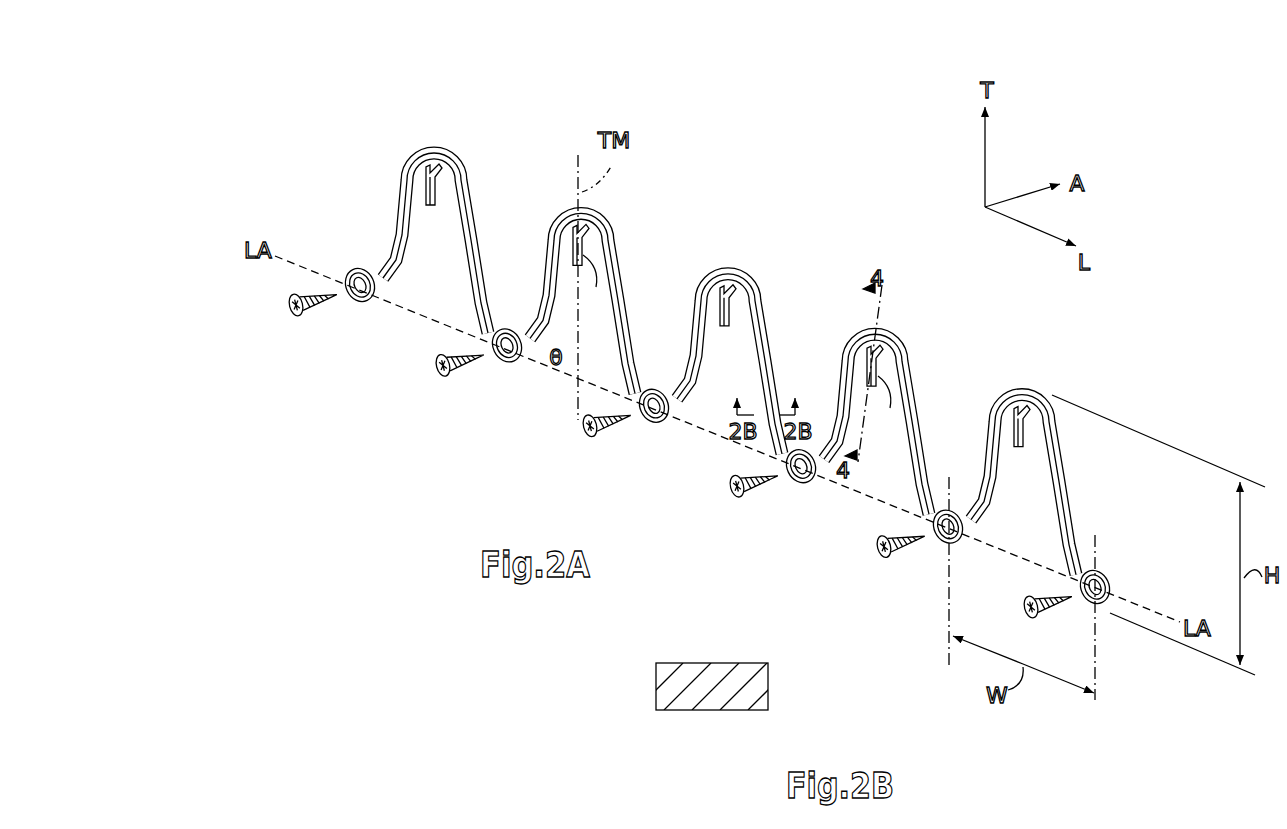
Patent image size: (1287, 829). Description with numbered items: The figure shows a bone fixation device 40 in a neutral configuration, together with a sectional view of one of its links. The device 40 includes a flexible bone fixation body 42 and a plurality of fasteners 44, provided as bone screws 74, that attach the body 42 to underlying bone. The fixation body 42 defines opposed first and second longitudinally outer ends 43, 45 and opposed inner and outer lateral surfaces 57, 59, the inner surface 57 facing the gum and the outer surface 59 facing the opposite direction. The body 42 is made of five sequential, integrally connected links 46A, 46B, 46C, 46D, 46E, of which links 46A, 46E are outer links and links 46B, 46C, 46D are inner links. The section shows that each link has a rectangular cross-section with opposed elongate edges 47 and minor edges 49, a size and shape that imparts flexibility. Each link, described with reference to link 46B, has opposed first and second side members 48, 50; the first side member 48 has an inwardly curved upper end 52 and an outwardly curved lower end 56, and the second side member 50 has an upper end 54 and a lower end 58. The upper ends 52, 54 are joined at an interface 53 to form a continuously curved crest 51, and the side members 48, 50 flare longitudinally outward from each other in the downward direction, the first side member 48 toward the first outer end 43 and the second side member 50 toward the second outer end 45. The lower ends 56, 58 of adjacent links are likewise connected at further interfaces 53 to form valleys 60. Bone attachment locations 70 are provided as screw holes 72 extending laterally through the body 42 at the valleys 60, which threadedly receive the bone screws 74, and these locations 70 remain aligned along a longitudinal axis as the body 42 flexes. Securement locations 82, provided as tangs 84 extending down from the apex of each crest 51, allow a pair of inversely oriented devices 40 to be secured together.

In FIG. 2A, the bone fixation device 40 is at (476, 148).
In FIG. 2A, the flexible bone fixation body 42 is at (395, 168).
In FIG. 2A, the first longitudinally outer end 43 is at (345, 270).
In FIG. 2A, the fasteners 44 is at (287, 312).
In FIG. 2A, the second longitudinally outer end 45 is at (1117, 583).
In FIG. 2A, the link 46A is at (385, 240).
In FIG. 2A, the link 46B is at (537, 295).
In FIG. 2A, the link 46C is at (778, 362).
In FIG. 2A, the link 46D is at (927, 405).
In FIG. 2A, the link 46E is at (1073, 508).
In FIG. 2A, the elongate edges 47 is at (978, 515).
In FIG. 2B, the elongate edges 47 is at (698, 663).
In FIG. 2A, the first side member 48 is at (393, 188).
In FIG. 2A, the minor edges 49 is at (988, 487).
In FIG. 2B, the minor edges 49 is at (768, 680).
In FIG. 2A, the second side member 50 is at (474, 256).
In FIG. 2B, the second side member 50 is at (754, 661).
In FIG. 2A, the crest 51 is at (585, 210).
In FIG. 2A, the upper end of first side member 52 is at (420, 150).
In FIG. 2A, the interface 53 is at (569, 193).
In FIG. 2A, the upper end of second side member 54 is at (612, 262).
In FIG. 2A, the lower end of first side member 56 is at (352, 303).
In FIG. 2A, the inner lateral surface 57 is at (470, 185).
In FIG. 2A, the lower end of second side member 58 is at (486, 305).
In FIG. 2A, the outer lateral surface 59 is at (468, 200).
In FIG. 2A, the valley 60 is at (512, 380).
In FIG. 2A, the bone attachment locations 70 is at (356, 302).
In FIG. 2A, the screw holes 72 is at (440, 362).
In FIG. 2A, the bone screws 74 is at (338, 300).
In FIG. 2A, the securement locations 82 is at (603, 237).
In FIG. 2A, the tangs 84 is at (738, 345).